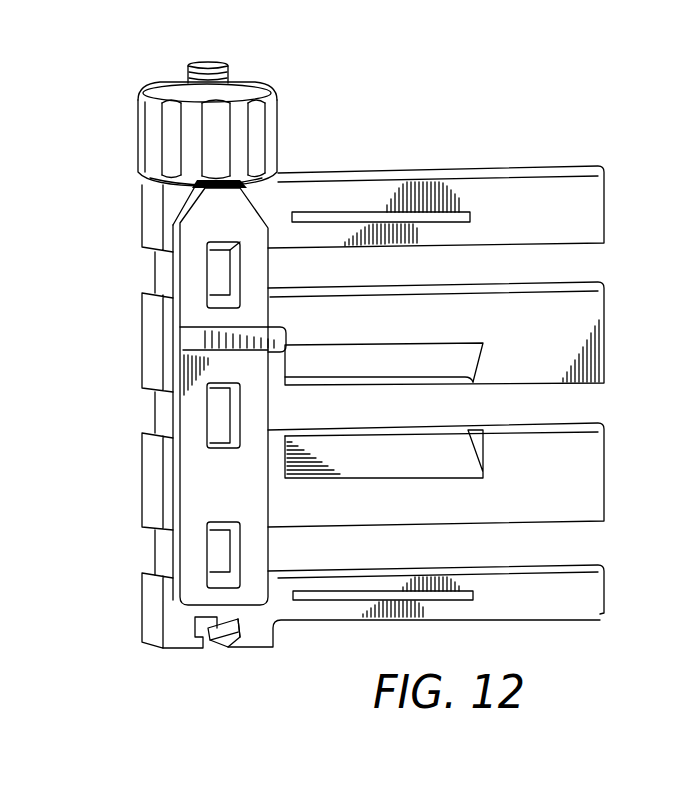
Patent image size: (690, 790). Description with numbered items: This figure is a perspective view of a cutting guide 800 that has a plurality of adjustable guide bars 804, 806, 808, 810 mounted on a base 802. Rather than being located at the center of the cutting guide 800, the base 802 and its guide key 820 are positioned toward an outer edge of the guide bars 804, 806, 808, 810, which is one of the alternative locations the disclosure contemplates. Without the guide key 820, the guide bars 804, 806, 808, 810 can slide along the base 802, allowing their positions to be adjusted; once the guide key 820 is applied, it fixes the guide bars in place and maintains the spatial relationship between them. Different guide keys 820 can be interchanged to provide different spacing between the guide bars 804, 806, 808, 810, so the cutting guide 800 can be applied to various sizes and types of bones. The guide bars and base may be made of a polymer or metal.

The cutting guide 800 is at (576, 84).
The base 802 is at (138, 130).
The guide bar 804 is at (604, 191).
The guide bar 806 is at (598, 333).
The guide bar 808 is at (598, 474).
The guide bar 810 is at (596, 592).
The guide key 820 is at (205, 487).